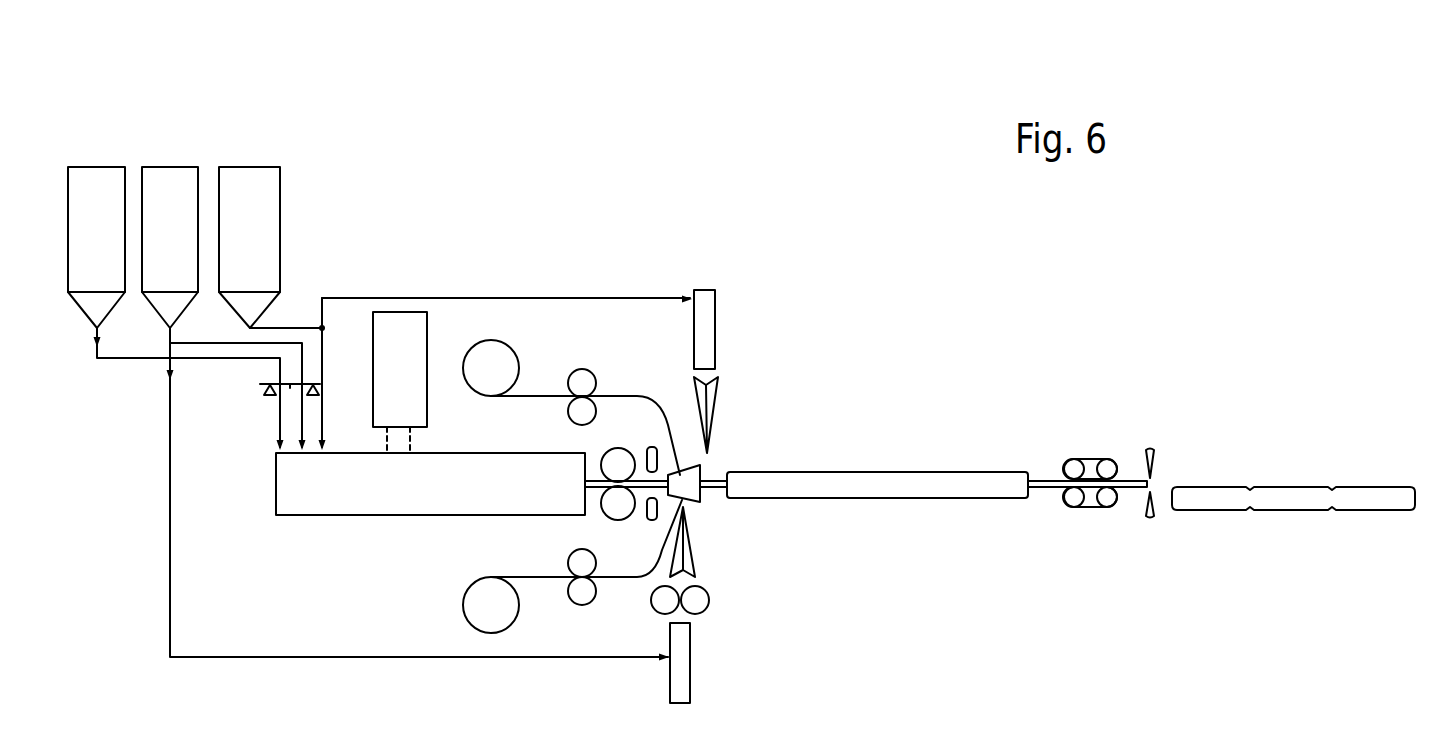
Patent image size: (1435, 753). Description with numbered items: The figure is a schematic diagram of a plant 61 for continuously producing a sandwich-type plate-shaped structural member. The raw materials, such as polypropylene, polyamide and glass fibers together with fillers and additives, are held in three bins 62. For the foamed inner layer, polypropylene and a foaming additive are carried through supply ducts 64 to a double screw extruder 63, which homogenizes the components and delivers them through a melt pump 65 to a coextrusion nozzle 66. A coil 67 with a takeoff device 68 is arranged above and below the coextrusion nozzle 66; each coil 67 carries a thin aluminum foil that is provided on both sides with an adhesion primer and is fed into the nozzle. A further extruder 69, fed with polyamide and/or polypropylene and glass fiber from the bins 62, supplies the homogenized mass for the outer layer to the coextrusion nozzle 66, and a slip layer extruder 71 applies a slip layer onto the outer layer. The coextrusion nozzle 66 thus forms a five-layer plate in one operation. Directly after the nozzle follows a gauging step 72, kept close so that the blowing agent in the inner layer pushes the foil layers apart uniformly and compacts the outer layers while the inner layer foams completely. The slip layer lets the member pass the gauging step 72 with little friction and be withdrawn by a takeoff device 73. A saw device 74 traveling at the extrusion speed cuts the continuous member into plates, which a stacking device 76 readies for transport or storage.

The plant 61 is at (799, 192).
The bins 62 is at (100, 148).
The double screw extruder 63 is at (339, 500).
The supply ducts 64 is at (209, 362).
The melt pump 65 is at (620, 507).
The coextrusion nozzle 66 is at (695, 498).
The coil 67 is at (518, 333).
The takeoff device 68 is at (584, 381).
The extruder 69 is at (692, 665).
The slip layer extruder 71 is at (726, 318).
The gauging step 72 is at (896, 453).
The takeoff device 73 is at (1086, 446).
The saw device 74 is at (1154, 435).
The stacking device 76 is at (1235, 530).